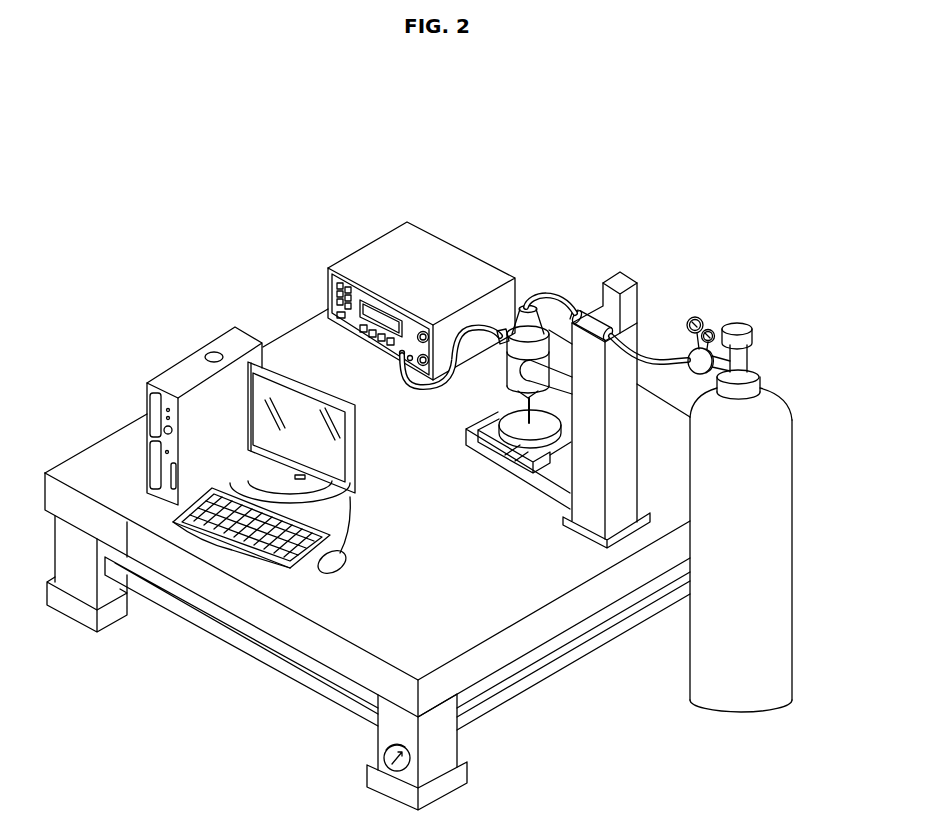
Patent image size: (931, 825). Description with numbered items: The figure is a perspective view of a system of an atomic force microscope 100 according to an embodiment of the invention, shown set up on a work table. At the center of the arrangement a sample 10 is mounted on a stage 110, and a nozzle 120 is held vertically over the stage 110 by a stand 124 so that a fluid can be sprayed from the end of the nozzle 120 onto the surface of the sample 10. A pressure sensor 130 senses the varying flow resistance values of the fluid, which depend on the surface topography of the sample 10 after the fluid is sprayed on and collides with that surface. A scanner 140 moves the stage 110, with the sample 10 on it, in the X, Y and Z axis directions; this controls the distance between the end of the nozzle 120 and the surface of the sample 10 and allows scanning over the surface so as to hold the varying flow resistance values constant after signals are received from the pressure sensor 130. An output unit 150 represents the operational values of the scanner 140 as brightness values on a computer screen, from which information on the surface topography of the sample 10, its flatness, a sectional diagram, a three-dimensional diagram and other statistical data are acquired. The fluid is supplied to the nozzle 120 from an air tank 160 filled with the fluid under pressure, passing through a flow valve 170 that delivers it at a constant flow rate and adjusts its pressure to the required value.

The sample 10 is at (500, 414).
The atomic force microscope 100 is at (490, 474).
The stage 110 is at (468, 446).
The nozzle 120 is at (513, 410).
The stand 124 is at (590, 507).
The pressure sensor 130 is at (425, 252).
The scanner 140 is at (533, 456).
The output unit 150 is at (197, 342).
The air tank 160 is at (772, 377).
The flow valve 170 is at (587, 314).